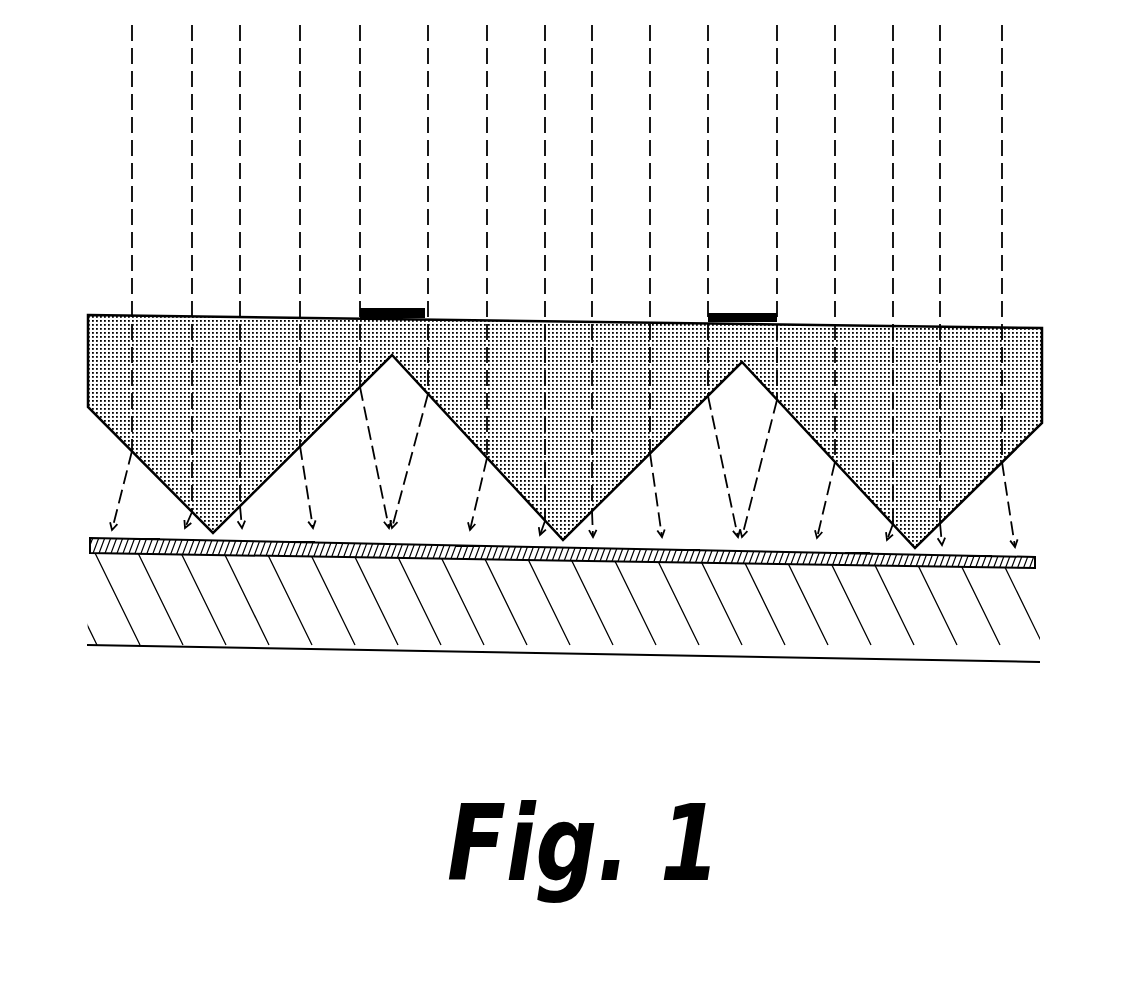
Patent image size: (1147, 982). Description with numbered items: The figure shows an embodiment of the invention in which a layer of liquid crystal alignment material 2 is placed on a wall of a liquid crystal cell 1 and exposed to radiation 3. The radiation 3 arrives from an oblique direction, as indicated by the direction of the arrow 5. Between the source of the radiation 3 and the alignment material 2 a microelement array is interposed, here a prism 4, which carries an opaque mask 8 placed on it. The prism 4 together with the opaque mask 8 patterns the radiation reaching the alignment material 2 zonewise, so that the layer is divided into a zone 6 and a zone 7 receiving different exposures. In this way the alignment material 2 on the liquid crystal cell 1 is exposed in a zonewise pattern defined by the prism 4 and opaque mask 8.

The liquid crystal cell 1 is at (1012, 617).
The layer of liquid crystal alignment material 2 is at (1032, 563).
The radiation 3 is at (564, 286).
The prism 4 is at (962, 388).
The arrow 5 is at (655, 495).
The zone 6 is at (147, 556).
The zone 7 is at (302, 557).
The opaque mask 8 is at (397, 308).